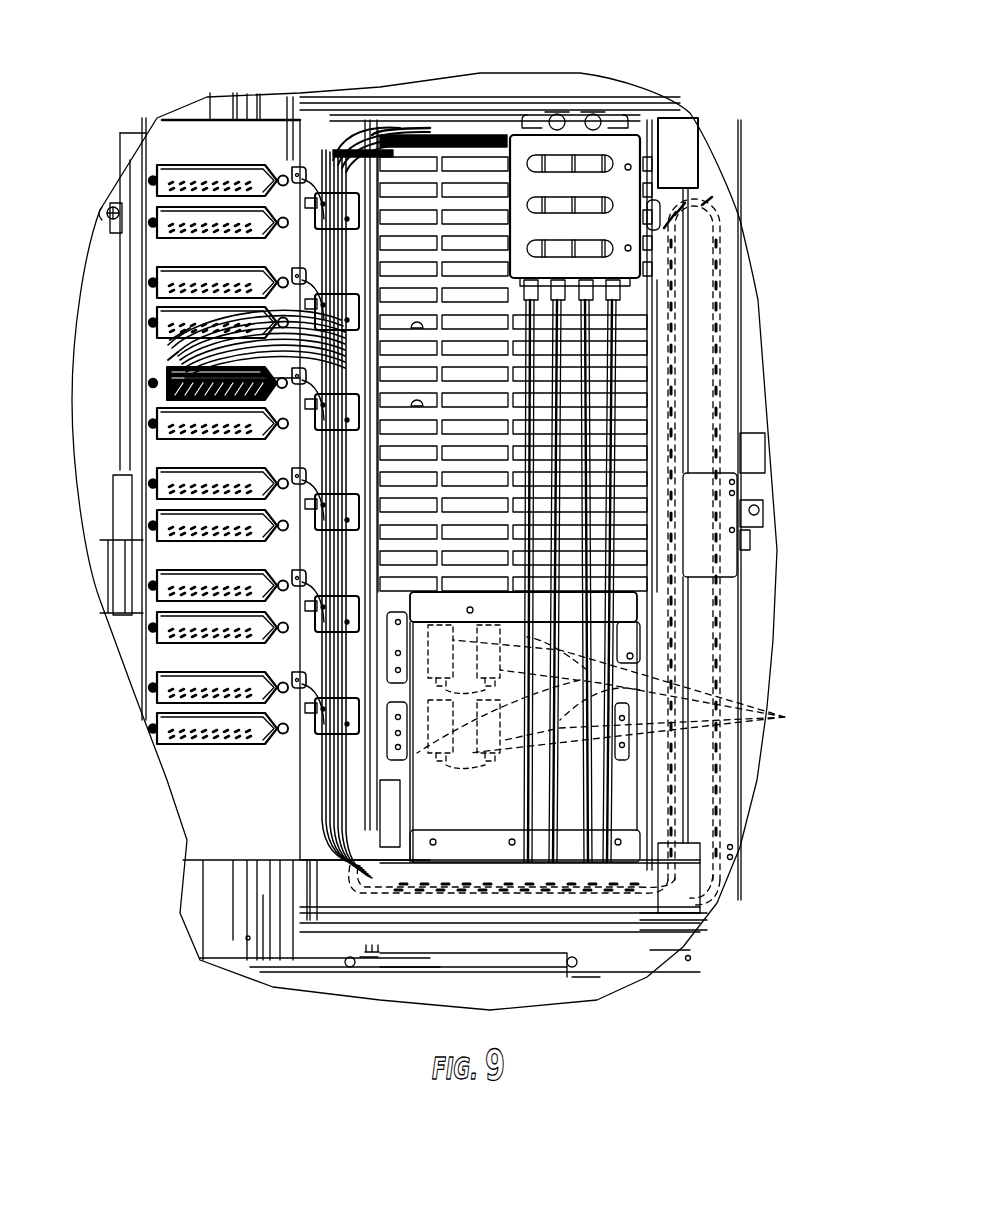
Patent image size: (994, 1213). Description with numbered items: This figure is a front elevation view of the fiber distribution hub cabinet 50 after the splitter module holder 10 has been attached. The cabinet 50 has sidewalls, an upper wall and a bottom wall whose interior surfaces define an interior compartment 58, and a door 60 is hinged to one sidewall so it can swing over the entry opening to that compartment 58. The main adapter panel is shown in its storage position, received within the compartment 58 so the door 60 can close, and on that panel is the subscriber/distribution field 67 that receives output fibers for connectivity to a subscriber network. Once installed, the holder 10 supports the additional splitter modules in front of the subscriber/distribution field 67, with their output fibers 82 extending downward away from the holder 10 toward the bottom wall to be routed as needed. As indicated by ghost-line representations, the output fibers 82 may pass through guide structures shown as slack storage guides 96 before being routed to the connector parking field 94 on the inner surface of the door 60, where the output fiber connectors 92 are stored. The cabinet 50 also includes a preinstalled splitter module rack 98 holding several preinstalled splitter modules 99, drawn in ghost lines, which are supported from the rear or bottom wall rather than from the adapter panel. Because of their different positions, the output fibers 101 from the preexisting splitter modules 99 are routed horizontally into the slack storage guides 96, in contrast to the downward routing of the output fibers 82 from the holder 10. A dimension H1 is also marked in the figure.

The fiber distribution hub cabinet 50 is at (749, 80).
The door 60 is at (170, 145).
The output fibers 101 is at (297, 100).
The subscriber/distribution field 67 is at (395, 218).
The interior compartment 58 is at (416, 310).
The holder 10 is at (627, 145).
The output fibers 82 is at (612, 413).
The output fiber connectors 92 is at (163, 355).
The connector parking field 94 is at (180, 403).
The slack storage guides 96 is at (680, 424).
The preinstalled splitter modules 99 is at (775, 718).
The preinstalled splitter module rack 98 is at (470, 765).
The height dimension H1 is at (487, 290).